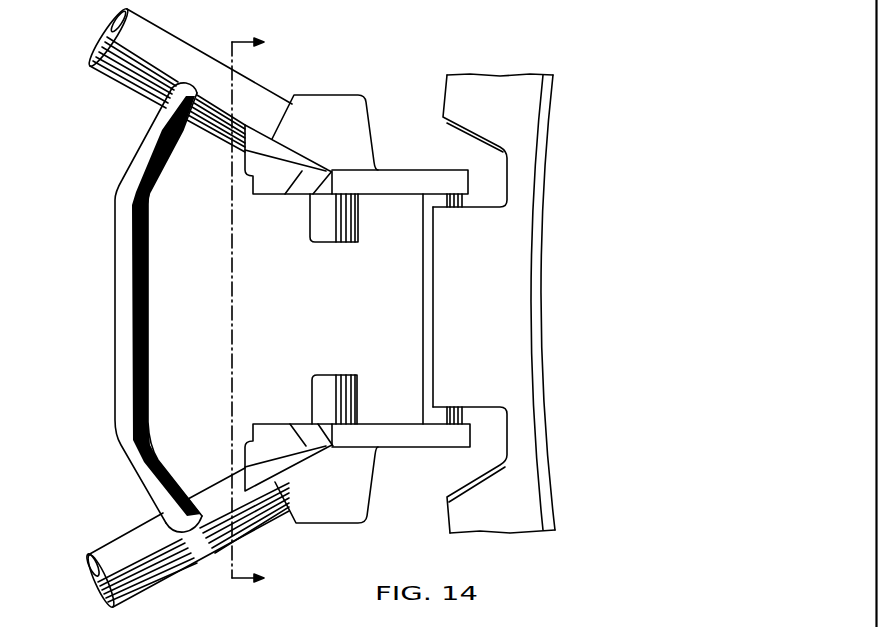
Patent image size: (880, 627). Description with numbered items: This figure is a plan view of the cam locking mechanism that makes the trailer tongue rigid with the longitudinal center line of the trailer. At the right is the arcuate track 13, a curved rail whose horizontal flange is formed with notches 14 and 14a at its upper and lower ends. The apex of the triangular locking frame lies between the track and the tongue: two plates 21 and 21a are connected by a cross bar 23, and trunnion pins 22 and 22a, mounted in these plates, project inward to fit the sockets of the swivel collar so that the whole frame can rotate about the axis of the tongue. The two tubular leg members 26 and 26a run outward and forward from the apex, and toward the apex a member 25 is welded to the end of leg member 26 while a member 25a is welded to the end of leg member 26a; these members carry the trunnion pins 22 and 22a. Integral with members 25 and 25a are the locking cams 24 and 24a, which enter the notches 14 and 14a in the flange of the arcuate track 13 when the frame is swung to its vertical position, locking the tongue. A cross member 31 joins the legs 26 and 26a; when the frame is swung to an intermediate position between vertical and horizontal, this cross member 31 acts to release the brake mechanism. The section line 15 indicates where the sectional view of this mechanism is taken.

The arcuate track 13 is at (487, 303).
The notch 14 is at (477, 160).
The notch 14a is at (482, 457).
The section line 15- 15 is at (263, 314).
The plate 21 is at (393, 180).
The plate 21a is at (397, 437).
The trunnion pin 22 is at (358, 239).
The trunnion pin 22a is at (355, 375).
The cross bar 23 is at (427, 283).
The locking cam 24 is at (280, 173).
The locking cam 24a is at (272, 445).
The member 25 is at (292, 120).
The member 25a is at (297, 487).
The leg member 26 is at (112, 78).
The leg member 26a is at (132, 537).
The cross member 31 is at (123, 327).